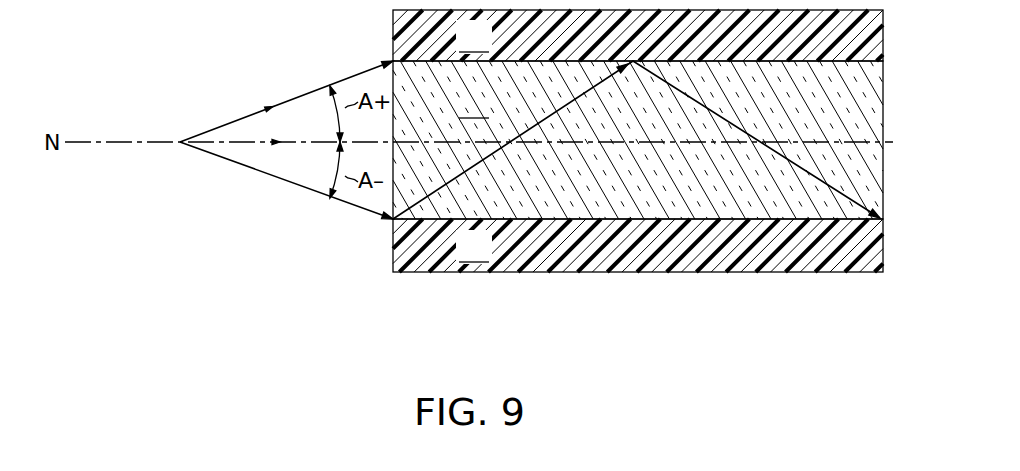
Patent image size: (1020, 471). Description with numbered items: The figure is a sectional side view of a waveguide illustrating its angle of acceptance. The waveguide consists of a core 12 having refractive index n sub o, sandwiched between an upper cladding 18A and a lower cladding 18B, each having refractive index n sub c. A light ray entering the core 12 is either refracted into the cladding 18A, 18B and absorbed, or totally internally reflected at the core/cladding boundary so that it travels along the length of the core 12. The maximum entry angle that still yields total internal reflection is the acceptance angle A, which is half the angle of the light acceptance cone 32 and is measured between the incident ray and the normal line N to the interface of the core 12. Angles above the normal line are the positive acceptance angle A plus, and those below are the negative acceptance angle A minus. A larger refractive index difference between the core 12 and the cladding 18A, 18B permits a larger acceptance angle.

The core 12 is at (877, 89).
The cladding 18A is at (883, 34).
The cladding 18B is at (883, 246).
The light acceptance cone 32 is at (270, 175).